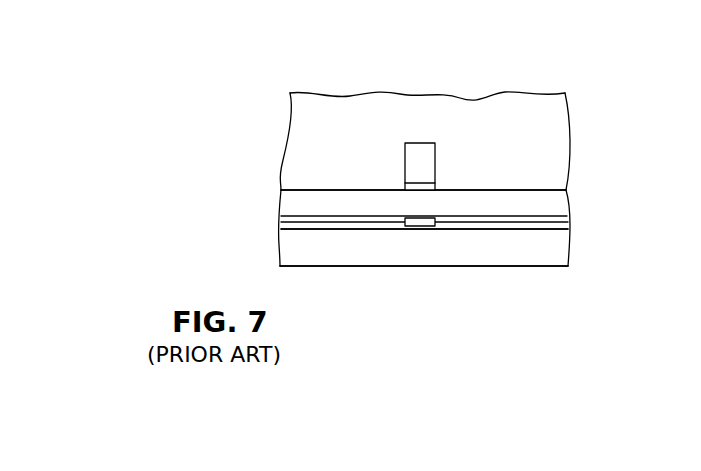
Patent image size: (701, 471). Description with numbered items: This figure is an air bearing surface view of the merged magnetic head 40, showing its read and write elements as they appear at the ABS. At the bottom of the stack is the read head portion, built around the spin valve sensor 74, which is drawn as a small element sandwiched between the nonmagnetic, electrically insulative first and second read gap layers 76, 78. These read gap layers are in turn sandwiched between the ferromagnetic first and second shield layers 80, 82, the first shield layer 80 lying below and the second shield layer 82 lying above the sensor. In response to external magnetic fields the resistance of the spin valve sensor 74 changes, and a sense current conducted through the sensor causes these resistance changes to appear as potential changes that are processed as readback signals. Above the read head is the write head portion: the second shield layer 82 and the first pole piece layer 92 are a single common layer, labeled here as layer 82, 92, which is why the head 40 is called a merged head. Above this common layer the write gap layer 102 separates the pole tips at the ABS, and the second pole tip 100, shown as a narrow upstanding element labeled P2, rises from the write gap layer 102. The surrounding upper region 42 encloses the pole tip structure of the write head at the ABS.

The merged magnetic head 40 is at (415, 187).
The upper layer / dielectric region 42 is at (290, 119).
The first shield layer 80 is at (402, 258).
The second shield layer 82 is at (365, 203).
The first pole piece layer 92 is at (287, 207).
The second read gap layer 78 is at (532, 222).
The first read gap layer 76 is at (336, 230).
The spin valve sensor 74 is at (418, 227).
The second pole tip 100 is at (416, 118).
The write gap layer 102 is at (417, 181).
The plug P2 is at (427, 167).